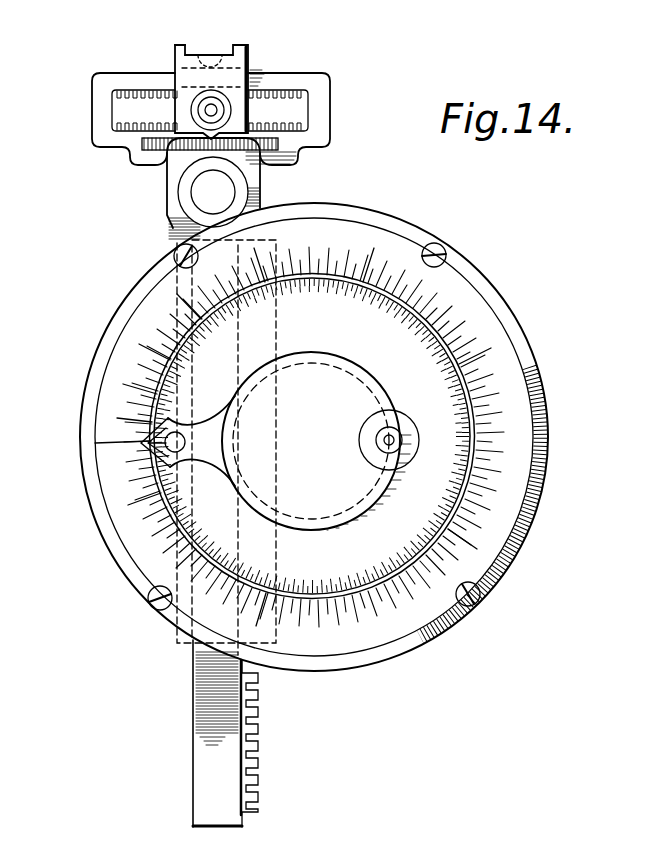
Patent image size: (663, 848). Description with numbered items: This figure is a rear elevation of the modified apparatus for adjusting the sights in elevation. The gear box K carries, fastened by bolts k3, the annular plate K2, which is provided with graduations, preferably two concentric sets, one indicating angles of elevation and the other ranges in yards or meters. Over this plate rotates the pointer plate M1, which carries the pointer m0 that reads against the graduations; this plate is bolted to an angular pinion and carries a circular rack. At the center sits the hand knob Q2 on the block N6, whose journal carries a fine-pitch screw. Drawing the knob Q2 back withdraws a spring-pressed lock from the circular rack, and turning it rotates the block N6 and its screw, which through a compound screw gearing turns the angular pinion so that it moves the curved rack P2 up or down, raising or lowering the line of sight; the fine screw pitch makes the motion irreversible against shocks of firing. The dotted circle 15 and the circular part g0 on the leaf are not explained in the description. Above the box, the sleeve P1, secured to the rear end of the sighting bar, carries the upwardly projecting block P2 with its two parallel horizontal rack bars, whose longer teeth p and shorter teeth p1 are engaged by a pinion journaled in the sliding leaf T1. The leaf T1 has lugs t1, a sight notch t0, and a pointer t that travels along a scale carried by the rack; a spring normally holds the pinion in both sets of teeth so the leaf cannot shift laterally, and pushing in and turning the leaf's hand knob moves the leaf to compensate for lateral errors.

The gear box K is at (520, 328).
The annular graduated plate K2 is at (522, 460).
The bolts k3 is at (173, 254).
The block and curved rack P2 is at (288, 80).
The sleeve P1 is at (256, 194).
The rack bar teeth p1 is at (127, 97).
The rack bar teeth p is at (130, 130).
The sliding leaf T1 is at (228, 72).
The lugs t1 is at (177, 45).
The sight notch t0 is at (212, 54).
The pinion g0 is at (205, 104).
The pointer t is at (200, 147).
The pointer m0 is at (140, 443).
The pointer plate M1 is at (198, 427).
The block N6 is at (316, 441).
The dashed circle on disc 15 is at (360, 377).
The knob Q2 is at (378, 422).